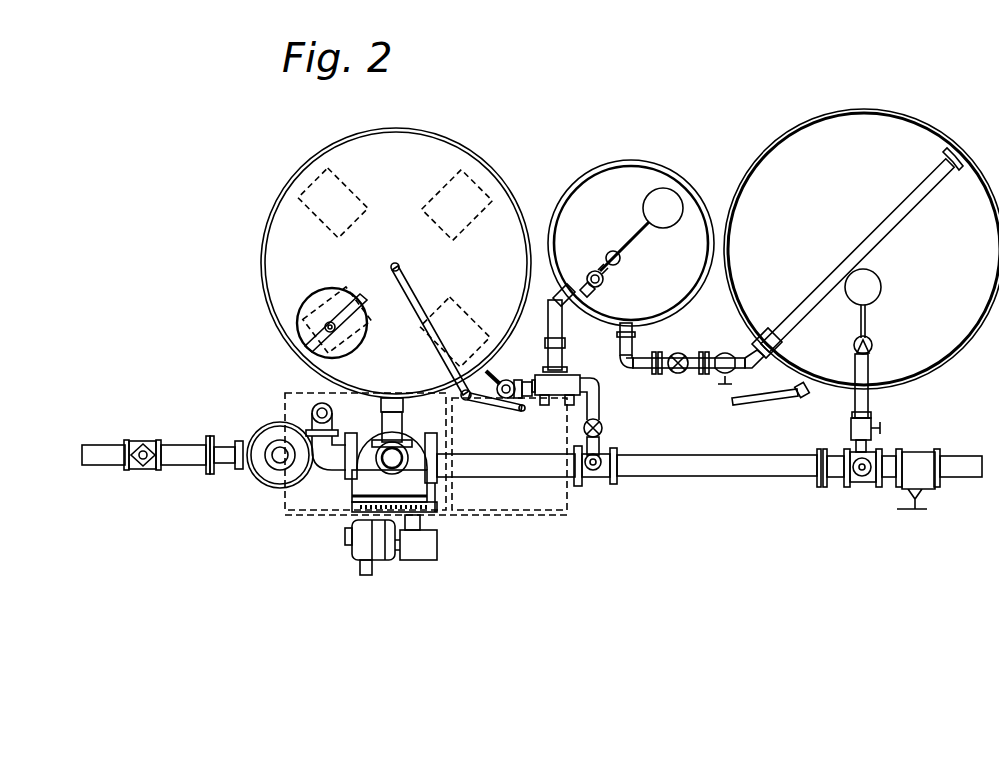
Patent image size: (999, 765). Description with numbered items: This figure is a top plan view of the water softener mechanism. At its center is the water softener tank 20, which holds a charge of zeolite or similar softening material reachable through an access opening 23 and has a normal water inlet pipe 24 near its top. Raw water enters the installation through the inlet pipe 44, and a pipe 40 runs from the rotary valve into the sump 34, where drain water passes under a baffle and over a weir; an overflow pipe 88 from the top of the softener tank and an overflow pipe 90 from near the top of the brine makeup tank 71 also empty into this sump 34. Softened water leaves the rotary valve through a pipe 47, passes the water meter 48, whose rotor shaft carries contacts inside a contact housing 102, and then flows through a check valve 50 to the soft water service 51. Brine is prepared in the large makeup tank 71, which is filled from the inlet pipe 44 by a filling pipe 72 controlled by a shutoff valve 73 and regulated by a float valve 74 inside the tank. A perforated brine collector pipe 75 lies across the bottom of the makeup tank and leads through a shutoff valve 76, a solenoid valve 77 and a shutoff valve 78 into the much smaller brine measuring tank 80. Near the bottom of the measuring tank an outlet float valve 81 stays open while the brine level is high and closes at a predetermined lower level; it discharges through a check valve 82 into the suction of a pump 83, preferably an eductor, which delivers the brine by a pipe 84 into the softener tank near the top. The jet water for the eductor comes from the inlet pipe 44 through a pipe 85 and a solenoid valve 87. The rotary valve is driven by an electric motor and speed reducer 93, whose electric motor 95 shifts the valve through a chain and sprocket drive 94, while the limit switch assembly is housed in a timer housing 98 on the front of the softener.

The water softener tank 20 is at (465, 152).
The access opening 23 is at (332, 290).
The normal water inlet pipe 24 is at (395, 398).
The sump 34 is at (502, 500).
The pipe 40 is at (332, 416).
The inlet pipe 44 is at (692, 460).
The pipe 47 is at (223, 446).
The water meter 48 is at (268, 486).
The check valve 50 is at (149, 448).
The soft water service 51 is at (97, 445).
The brine makeup tank 71 is at (866, 108).
The filling pipe 72 is at (855, 406).
The shutoff valve 73 is at (872, 420).
The float valve 74 is at (871, 347).
The perforated brine collector pipe 75 is at (895, 224).
The shutoff valve 76 is at (726, 352).
The solenoid valve 77 is at (679, 373).
The shutoff valve 78 is at (641, 341).
The brine measuring tank 80 is at (669, 168).
The outlet float valve 81 is at (587, 280).
The check valve 82 is at (569, 360).
The pump 83 is at (558, 397).
The pipe 84 is at (509, 378).
The pipe 85 is at (603, 457).
The solenoid valve 87 is at (603, 428).
The overflow pipe 88 is at (433, 350).
The overflow pipe 90 is at (763, 402).
The electric motor and speed reducer 93 is at (406, 560).
The chain and sprocket drive 94 is at (352, 513).
The electric motor 95 is at (367, 548).
The timer housing 98 is at (352, 495).
The contact housing 102 is at (277, 459).